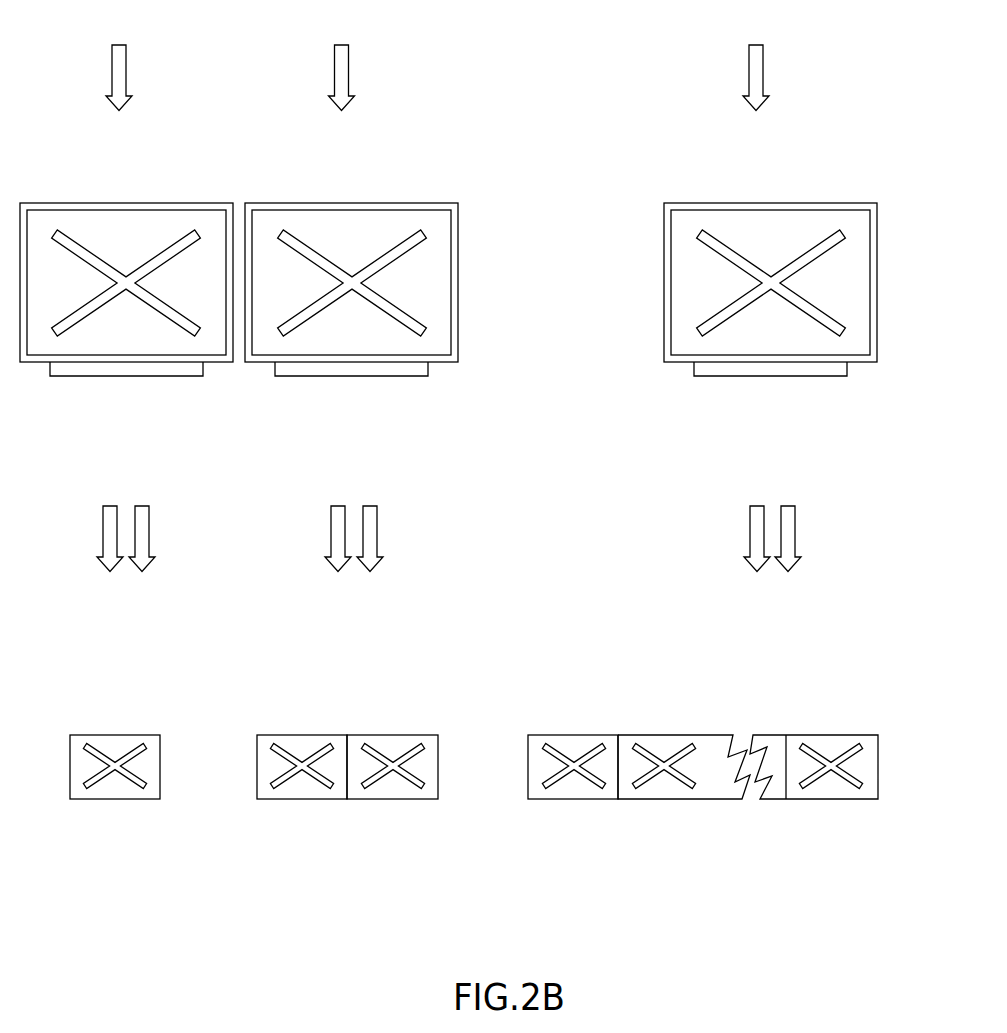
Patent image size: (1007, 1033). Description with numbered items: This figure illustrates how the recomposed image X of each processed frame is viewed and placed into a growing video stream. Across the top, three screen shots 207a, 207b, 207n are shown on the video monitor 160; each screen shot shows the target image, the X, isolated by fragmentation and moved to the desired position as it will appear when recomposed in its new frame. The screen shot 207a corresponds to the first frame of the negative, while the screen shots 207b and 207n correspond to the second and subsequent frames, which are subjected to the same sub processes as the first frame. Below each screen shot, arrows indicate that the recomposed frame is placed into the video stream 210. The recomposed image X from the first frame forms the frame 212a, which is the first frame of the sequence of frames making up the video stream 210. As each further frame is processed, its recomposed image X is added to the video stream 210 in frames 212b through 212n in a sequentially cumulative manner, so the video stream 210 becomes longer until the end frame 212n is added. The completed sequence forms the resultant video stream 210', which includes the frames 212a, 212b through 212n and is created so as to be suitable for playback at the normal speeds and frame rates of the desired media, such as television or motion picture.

The video monitor 160 is at (110, 203).
The screen shot 207a is at (143, 330).
The screen shot 207b is at (382, 330).
The screen shot 207n is at (775, 330).
The video stream 210 is at (254, 721).
The resultant video stream 210' is at (703, 721).
The frame 212a is at (122, 787).
The frame 212b is at (400, 787).
The frame 212n is at (838, 787).